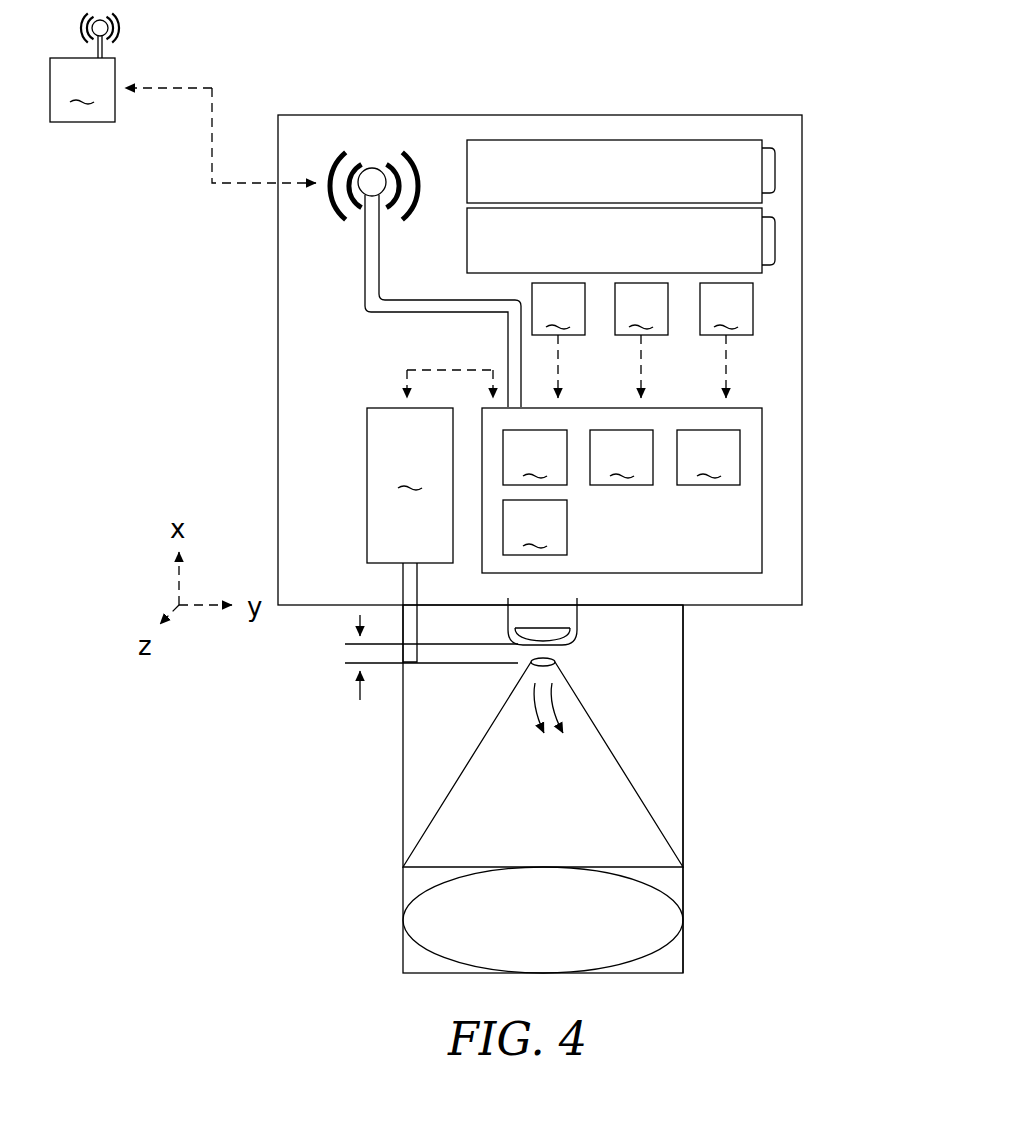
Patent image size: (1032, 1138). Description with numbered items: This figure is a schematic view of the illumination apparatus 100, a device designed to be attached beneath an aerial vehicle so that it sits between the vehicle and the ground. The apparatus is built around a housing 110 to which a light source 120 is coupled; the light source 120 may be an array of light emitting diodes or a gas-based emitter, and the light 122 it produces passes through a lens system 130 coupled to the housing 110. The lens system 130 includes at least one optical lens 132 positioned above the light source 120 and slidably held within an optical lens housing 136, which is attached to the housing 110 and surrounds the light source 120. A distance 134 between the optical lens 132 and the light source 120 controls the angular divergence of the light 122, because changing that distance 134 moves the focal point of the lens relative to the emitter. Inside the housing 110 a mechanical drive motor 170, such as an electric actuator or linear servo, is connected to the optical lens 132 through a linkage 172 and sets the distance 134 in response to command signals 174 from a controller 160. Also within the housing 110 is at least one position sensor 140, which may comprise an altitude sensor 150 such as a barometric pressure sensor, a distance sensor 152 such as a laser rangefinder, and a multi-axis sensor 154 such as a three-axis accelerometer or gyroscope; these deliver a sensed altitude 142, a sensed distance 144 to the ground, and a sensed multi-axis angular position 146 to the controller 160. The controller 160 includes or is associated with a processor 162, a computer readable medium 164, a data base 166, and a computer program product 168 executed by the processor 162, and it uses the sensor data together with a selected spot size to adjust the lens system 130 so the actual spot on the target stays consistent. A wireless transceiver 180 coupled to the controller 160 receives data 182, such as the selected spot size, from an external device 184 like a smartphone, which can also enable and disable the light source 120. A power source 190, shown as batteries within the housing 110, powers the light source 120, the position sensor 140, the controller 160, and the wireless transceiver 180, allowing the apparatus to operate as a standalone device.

The illumination apparatus 100 is at (830, 79).
The housing 110 is at (806, 299).
The light source 120 is at (582, 618).
The light 122 is at (560, 716).
The lens system 130 is at (688, 763).
The optical lens 132 is at (418, 840).
The distance 134 is at (360, 690).
The optical lens housing 136 is at (683, 840).
The position sensor 140 is at (710, 340).
The sensed altitude 142 is at (562, 372).
The sensed distance 144 is at (645, 372).
The sensed multi-axis angular position 146 is at (730, 372).
The altitude sensor 150 is at (558, 309).
The distance sensor 152 is at (641, 309).
The multi-axis sensor 154 is at (726, 309).
The controller 160 is at (681, 490).
The processor 162 is at (535, 457).
The computer readable medium 164 is at (621, 457).
The data base 166 is at (708, 457).
The computer program product 168 is at (535, 527).
The mechanical drive motor 170 is at (410, 485).
The linkage 172 is at (403, 575).
The command signals 174 is at (430, 370).
The wireless transceiver 180 is at (361, 229).
The data 182 is at (190, 86).
The external device 184 is at (84, 67).
The power source 190 is at (617, 222).